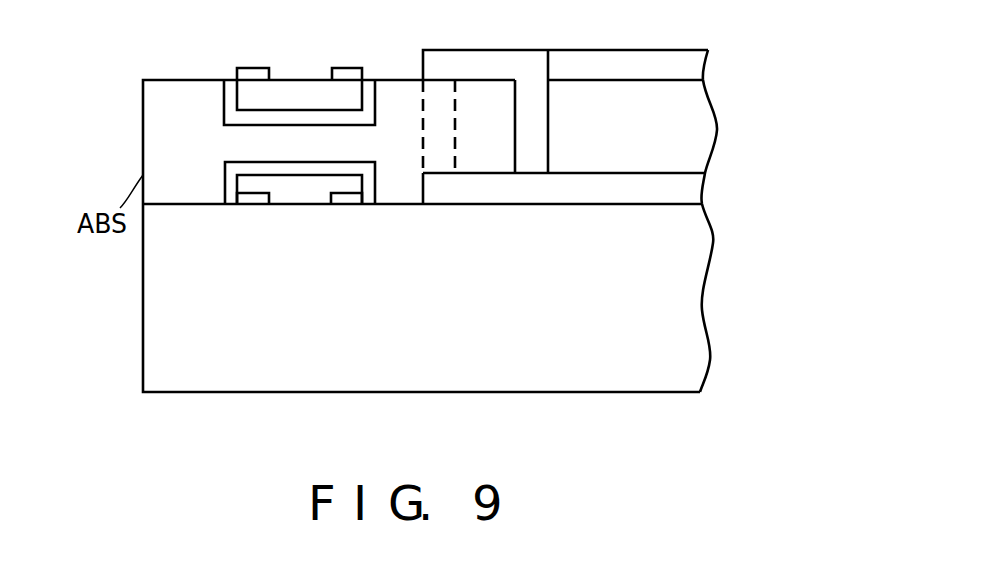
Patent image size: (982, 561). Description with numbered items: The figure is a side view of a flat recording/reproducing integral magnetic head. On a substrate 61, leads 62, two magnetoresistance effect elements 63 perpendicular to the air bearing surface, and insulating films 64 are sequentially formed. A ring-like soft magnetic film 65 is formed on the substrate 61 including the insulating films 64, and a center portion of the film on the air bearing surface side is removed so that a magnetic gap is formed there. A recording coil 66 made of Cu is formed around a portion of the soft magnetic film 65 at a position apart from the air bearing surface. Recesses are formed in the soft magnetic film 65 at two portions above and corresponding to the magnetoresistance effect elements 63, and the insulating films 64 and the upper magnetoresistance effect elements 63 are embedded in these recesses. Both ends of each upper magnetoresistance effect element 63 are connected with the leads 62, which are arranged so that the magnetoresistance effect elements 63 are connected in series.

The substrate 61 is at (520, 375).
The leads 62 is at (256, 78).
The magnetoresistance effect elements 63 is at (298, 92).
The insulating films 64 is at (337, 113).
The soft magnetic film 65 is at (160, 153).
The recording coil 66 is at (615, 65).